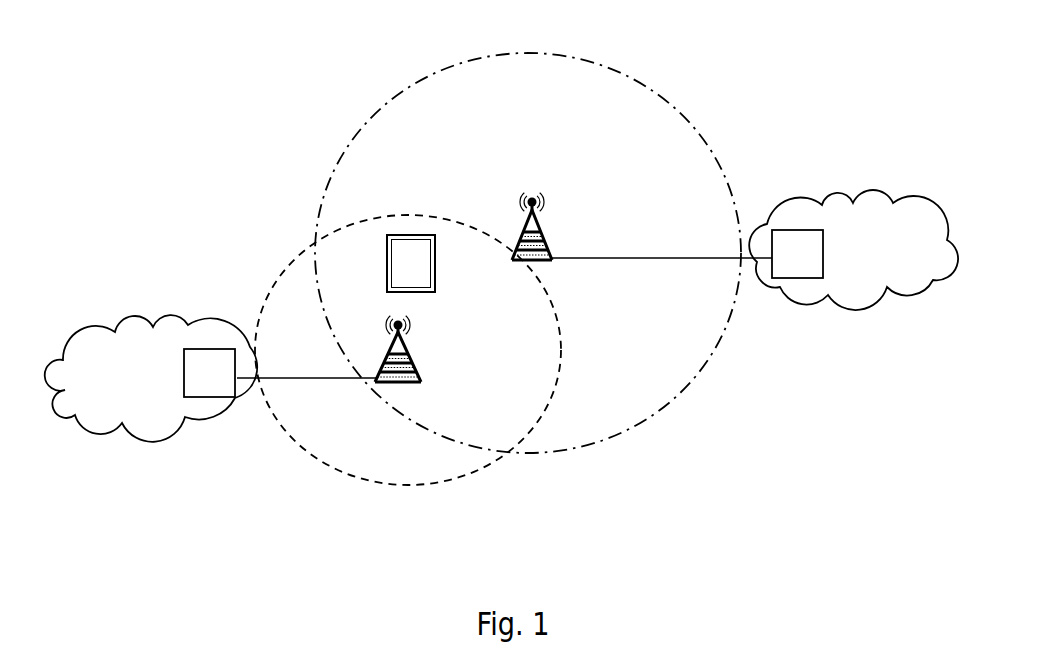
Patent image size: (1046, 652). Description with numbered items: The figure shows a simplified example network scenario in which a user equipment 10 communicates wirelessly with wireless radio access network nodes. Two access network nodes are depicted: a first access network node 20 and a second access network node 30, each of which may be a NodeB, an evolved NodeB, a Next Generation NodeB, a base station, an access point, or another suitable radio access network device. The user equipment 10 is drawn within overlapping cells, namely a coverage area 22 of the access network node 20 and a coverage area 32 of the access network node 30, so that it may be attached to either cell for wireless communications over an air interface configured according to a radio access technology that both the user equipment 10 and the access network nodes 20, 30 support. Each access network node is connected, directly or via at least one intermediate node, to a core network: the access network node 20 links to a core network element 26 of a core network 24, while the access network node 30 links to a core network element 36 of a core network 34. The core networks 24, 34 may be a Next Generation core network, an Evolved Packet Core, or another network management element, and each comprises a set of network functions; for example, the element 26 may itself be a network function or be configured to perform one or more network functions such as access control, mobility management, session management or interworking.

The user equipment 10 is at (417, 234).
The access network node 20 is at (550, 251).
The coverage area 22 is at (640, 83).
The core network 24 is at (853, 250).
The core network element 26 is at (814, 268).
The access network node 30 is at (423, 373).
The coverage area 32 is at (281, 262).
The core network 34 is at (151, 378).
The core network element 36 is at (224, 386).